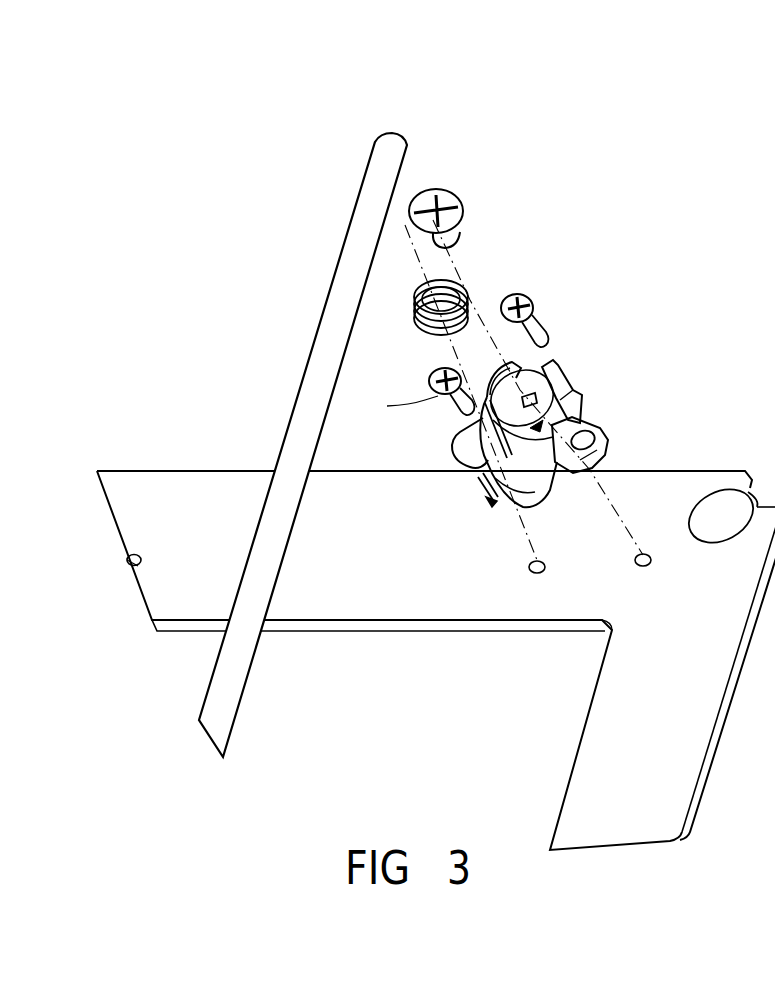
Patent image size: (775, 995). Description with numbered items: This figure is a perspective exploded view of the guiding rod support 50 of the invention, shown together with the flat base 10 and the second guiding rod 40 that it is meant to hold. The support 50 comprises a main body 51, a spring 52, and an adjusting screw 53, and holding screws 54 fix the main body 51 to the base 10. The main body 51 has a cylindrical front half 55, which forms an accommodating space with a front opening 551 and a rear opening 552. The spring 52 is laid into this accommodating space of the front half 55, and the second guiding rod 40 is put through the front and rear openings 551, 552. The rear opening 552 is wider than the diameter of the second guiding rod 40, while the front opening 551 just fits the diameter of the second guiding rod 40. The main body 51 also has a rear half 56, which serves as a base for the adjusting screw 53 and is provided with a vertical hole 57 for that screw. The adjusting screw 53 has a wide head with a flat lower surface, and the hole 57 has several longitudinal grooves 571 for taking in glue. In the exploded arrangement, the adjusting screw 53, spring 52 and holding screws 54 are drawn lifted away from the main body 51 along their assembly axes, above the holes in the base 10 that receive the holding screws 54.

The base 10 is at (185, 493).
The second guiding rod 40 is at (325, 333).
The support 50 is at (510, 198).
The main body 51 is at (580, 391).
The spring 52 is at (465, 300).
The adjusting screw 53 is at (447, 193).
The holding screws 54 is at (535, 302).
The cylindrical front half 55 is at (463, 472).
The front opening 551 is at (492, 503).
The rear opening 552 is at (580, 408).
The rear half 56 is at (498, 374).
The vertical hole 57 is at (560, 345).
The longitudinal grooves 571 is at (560, 372).